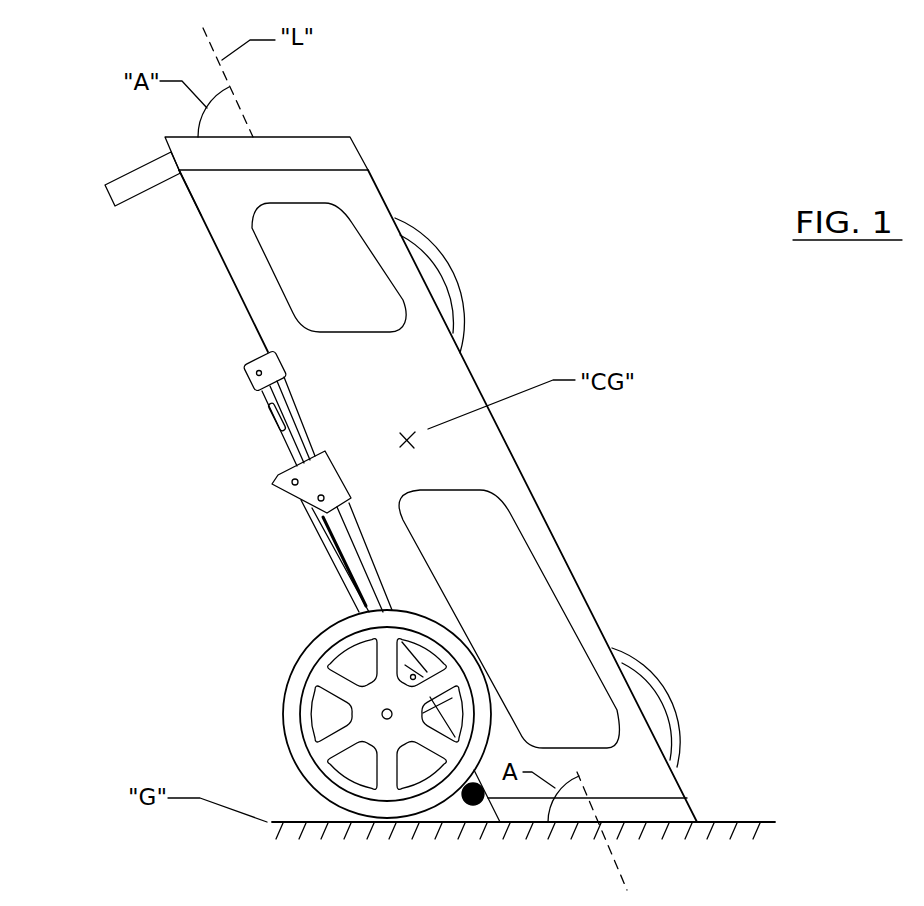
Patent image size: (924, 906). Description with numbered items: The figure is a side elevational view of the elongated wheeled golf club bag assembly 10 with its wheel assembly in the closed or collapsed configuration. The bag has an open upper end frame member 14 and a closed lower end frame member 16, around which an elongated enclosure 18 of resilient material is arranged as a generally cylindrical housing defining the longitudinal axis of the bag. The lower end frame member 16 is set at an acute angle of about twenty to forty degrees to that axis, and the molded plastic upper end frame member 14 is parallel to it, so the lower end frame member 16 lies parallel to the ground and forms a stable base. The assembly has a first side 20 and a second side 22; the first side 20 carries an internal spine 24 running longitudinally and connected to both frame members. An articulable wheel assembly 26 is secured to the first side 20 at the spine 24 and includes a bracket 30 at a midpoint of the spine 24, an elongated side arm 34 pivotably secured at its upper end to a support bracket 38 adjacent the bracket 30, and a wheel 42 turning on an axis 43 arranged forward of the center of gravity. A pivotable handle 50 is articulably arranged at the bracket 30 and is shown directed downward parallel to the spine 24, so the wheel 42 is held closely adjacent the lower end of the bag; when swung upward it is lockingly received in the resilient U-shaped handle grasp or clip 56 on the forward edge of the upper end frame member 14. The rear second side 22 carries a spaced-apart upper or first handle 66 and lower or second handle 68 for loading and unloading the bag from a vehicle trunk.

The elongated wheeled golf club bag assembly 10 is at (706, 354).
The open upper end frame member 14 is at (288, 135).
The closed lower end frame member 16 is at (637, 796).
The elongated enclosure 18 is at (435, 475).
The first side 20 is at (137, 212).
The second side 22 is at (532, 496).
The internal spine 24 is at (247, 315).
The articulable wheel assembly 26 is at (253, 470).
The bracket 30 is at (245, 382).
The side arm 34 is at (301, 556).
The support bracket 38 is at (273, 482).
The wheel 42 is at (350, 714).
The axis 43 is at (299, 740).
The pivotable handle 50 is at (212, 436).
The handle grasp or clip 56 is at (108, 167).
The upper or first handle 66 is at (455, 277).
The lower or second handle 68 is at (678, 707).